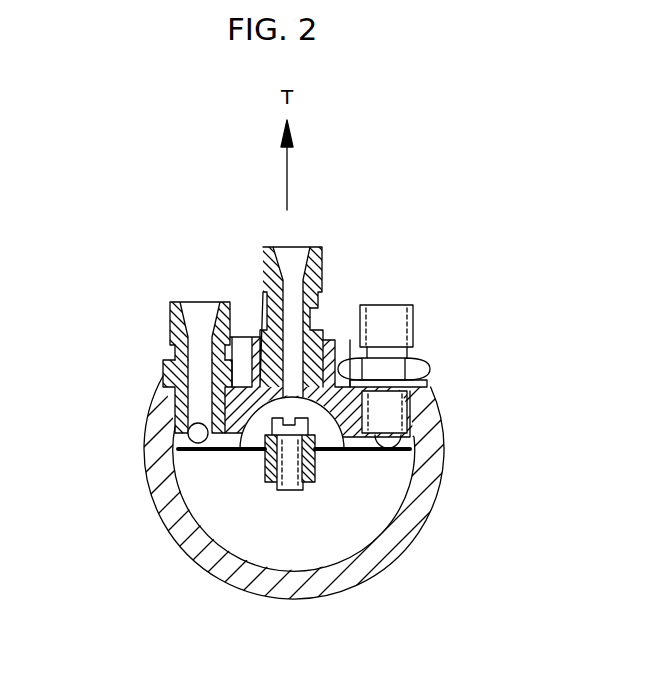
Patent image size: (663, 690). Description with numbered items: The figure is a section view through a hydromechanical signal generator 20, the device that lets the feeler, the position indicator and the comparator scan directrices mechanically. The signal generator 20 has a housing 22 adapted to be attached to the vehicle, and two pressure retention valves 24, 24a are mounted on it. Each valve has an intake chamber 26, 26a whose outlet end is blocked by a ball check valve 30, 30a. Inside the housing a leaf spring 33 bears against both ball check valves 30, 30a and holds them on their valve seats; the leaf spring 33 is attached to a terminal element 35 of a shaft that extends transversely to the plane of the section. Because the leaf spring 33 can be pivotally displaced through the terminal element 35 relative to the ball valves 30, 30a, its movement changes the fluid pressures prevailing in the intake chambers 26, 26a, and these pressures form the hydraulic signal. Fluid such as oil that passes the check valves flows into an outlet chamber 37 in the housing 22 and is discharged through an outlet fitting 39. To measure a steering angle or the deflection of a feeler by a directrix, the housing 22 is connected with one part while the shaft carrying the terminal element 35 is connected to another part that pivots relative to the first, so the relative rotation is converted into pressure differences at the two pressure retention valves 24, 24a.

The signal generator 20 is at (524, 312).
The housing 22 is at (407, 507).
The pressure retention valve 24 is at (160, 370).
The pressure retention valve 24a is at (430, 366).
The intake chamber 26 is at (170, 320).
The intake chamber 26a is at (398, 328).
The ball check valve 30 is at (200, 433).
The ball check valve 30a is at (410, 437).
The leaf spring 33 is at (400, 449).
The terminal element 35 is at (313, 487).
The outlet chamber 37 is at (232, 505).
The outlet fitting 39 is at (323, 250).